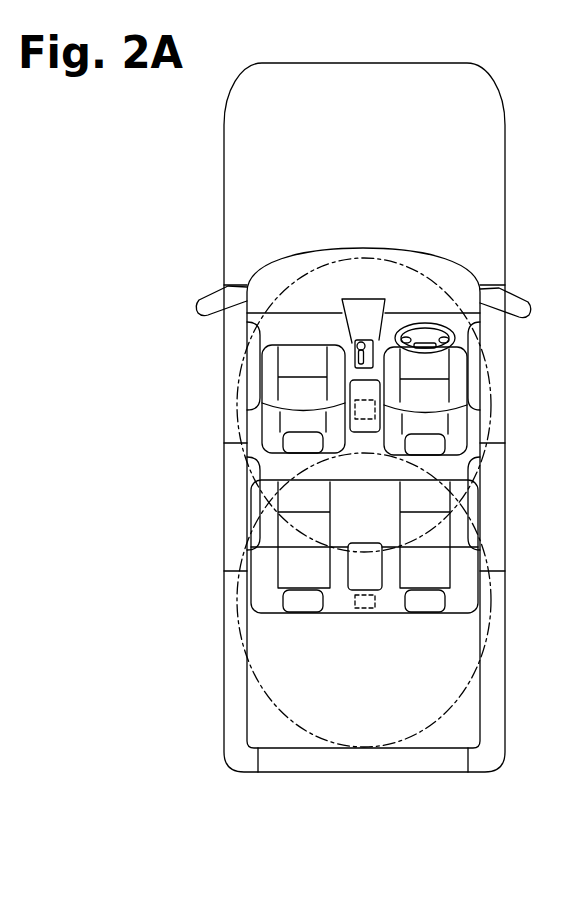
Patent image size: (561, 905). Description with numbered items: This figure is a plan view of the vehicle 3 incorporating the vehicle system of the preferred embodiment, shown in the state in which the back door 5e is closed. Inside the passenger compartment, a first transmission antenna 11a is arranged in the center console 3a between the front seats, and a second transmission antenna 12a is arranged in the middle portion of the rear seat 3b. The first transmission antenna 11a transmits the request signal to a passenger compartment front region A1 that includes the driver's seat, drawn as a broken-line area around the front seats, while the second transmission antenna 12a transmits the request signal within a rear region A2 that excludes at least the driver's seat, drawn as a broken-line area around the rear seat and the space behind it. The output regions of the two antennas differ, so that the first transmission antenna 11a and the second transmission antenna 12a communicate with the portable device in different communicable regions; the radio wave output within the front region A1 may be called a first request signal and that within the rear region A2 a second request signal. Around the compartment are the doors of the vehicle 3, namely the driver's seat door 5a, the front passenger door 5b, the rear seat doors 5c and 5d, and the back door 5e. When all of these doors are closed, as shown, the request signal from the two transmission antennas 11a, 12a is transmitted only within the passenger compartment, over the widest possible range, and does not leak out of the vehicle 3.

The vehicle 3 is at (505, 124).
The center console 3a is at (347, 389).
The rear seat 3b is at (270, 609).
The driver's seat door 5a is at (505, 368).
The front passenger door 5b is at (224, 373).
The rear seat door 5c is at (505, 502).
The rear seat door 5d is at (224, 502).
The back door 5e is at (353, 767).
The first transmission antenna 11a is at (363, 422).
The second transmission antenna 12a is at (368, 610).
The front region A1 is at (300, 281).
The rear region A2 is at (465, 690).